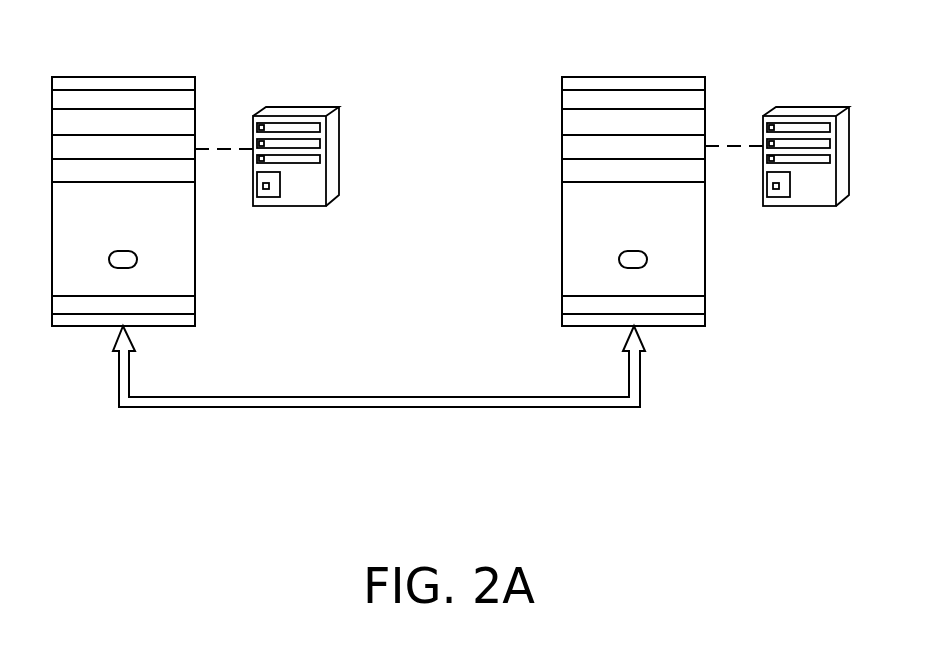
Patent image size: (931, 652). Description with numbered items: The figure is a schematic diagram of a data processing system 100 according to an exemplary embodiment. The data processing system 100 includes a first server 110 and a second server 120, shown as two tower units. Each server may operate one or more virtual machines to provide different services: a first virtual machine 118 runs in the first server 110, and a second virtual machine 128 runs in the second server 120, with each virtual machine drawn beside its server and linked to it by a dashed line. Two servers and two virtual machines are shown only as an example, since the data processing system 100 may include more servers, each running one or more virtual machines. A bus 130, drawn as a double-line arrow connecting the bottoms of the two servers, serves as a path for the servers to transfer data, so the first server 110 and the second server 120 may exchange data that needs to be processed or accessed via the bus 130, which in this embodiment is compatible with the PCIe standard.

The data processing system 100 is at (836, 472).
The first server 110 is at (132, 77).
The first virtual machine 118 is at (305, 107).
The second server 120 is at (642, 77).
The second virtual machine 128 is at (815, 107).
The bus 130 is at (642, 377).